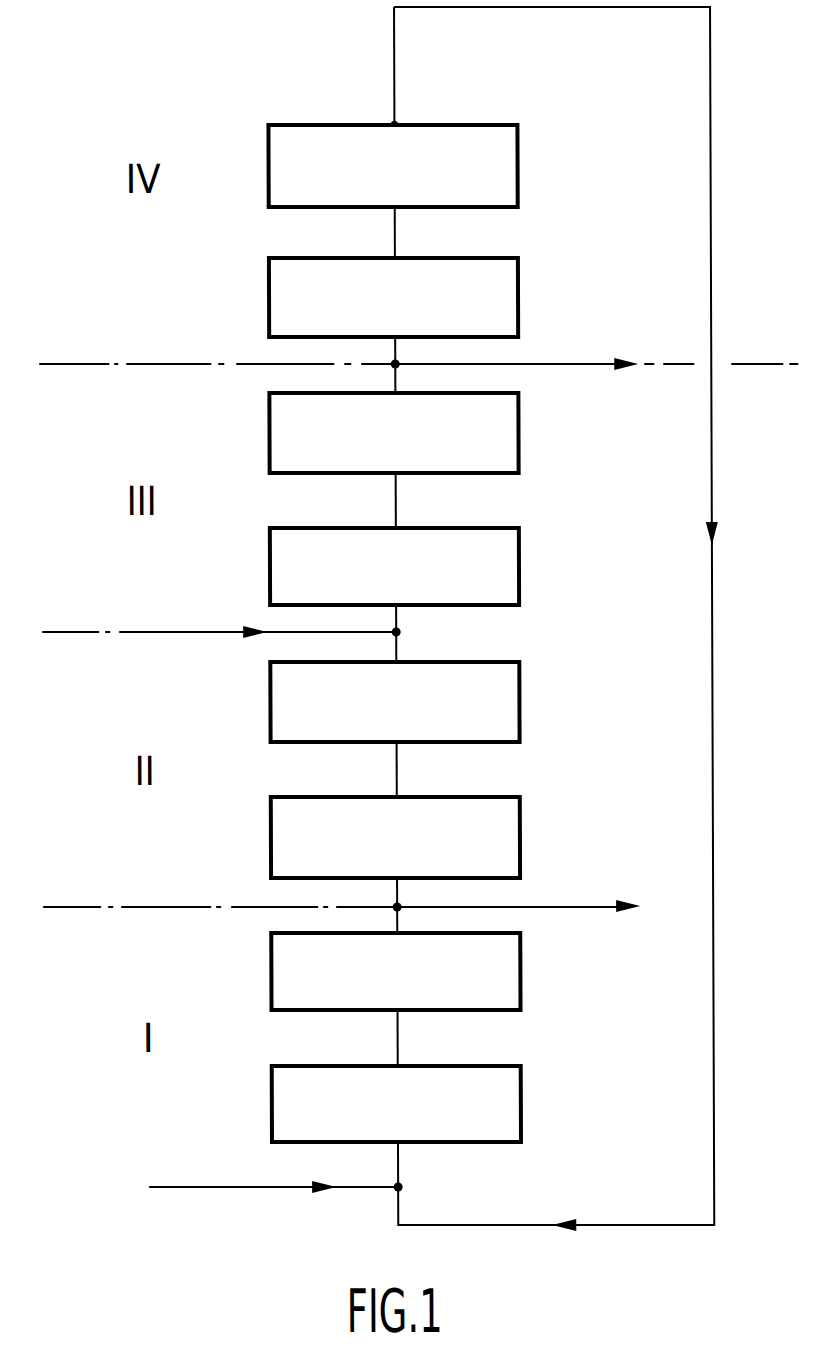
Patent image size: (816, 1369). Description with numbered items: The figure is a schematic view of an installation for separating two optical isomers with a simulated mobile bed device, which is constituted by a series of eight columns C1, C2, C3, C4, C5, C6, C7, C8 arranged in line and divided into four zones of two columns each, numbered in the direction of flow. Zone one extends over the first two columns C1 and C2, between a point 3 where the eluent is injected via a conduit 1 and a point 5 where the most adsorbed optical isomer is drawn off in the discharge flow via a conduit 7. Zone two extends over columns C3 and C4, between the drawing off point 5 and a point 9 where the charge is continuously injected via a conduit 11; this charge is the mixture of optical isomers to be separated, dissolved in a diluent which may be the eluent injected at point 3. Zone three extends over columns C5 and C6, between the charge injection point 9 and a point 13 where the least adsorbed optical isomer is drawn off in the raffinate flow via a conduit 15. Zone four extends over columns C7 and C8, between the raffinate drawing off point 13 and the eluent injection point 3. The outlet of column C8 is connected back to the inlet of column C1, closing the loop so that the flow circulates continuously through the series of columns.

The conduit 1 is at (246, 1188).
The point of injection of the eluent 3 is at (399, 1187).
The drawing off point 5 is at (397, 904).
The conduit 7 is at (578, 905).
The point of injection of the charge 9 is at (398, 634).
The conduit 11 is at (207, 633).
The drawing off point of the raffinate 13 is at (397, 366).
The conduit 15 is at (575, 363).
The column C1 is at (517, 1105).
The column C2 is at (517, 973).
The column C3 is at (517, 835).
The column C4 is at (517, 700).
The column C5 is at (517, 565).
The column C6 is at (517, 432).
The column C7 is at (517, 296).
The column C8 is at (517, 163).